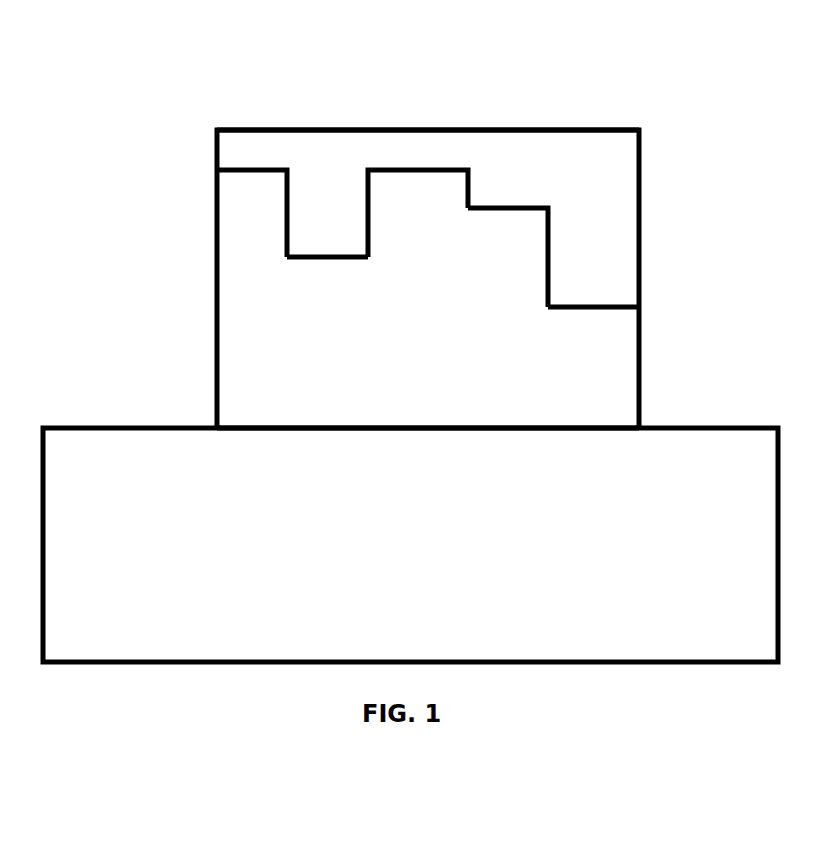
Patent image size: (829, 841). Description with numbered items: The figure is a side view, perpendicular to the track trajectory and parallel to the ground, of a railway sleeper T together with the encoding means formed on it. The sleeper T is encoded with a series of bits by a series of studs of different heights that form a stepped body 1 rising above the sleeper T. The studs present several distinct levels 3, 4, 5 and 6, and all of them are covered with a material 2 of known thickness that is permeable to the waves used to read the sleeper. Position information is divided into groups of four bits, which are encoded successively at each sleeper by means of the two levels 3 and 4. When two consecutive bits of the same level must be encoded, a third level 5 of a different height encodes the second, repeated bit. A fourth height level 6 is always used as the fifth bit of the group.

The sleeper T is at (135, 462).
The semiconductor body 1 is at (228, 312).
The material permeable to the waves 2 is at (302, 143).
The first level 3 is at (245, 170).
The second level 4 is at (522, 205).
The third level 5 is at (328, 257).
The fourth height level 6 is at (598, 307).